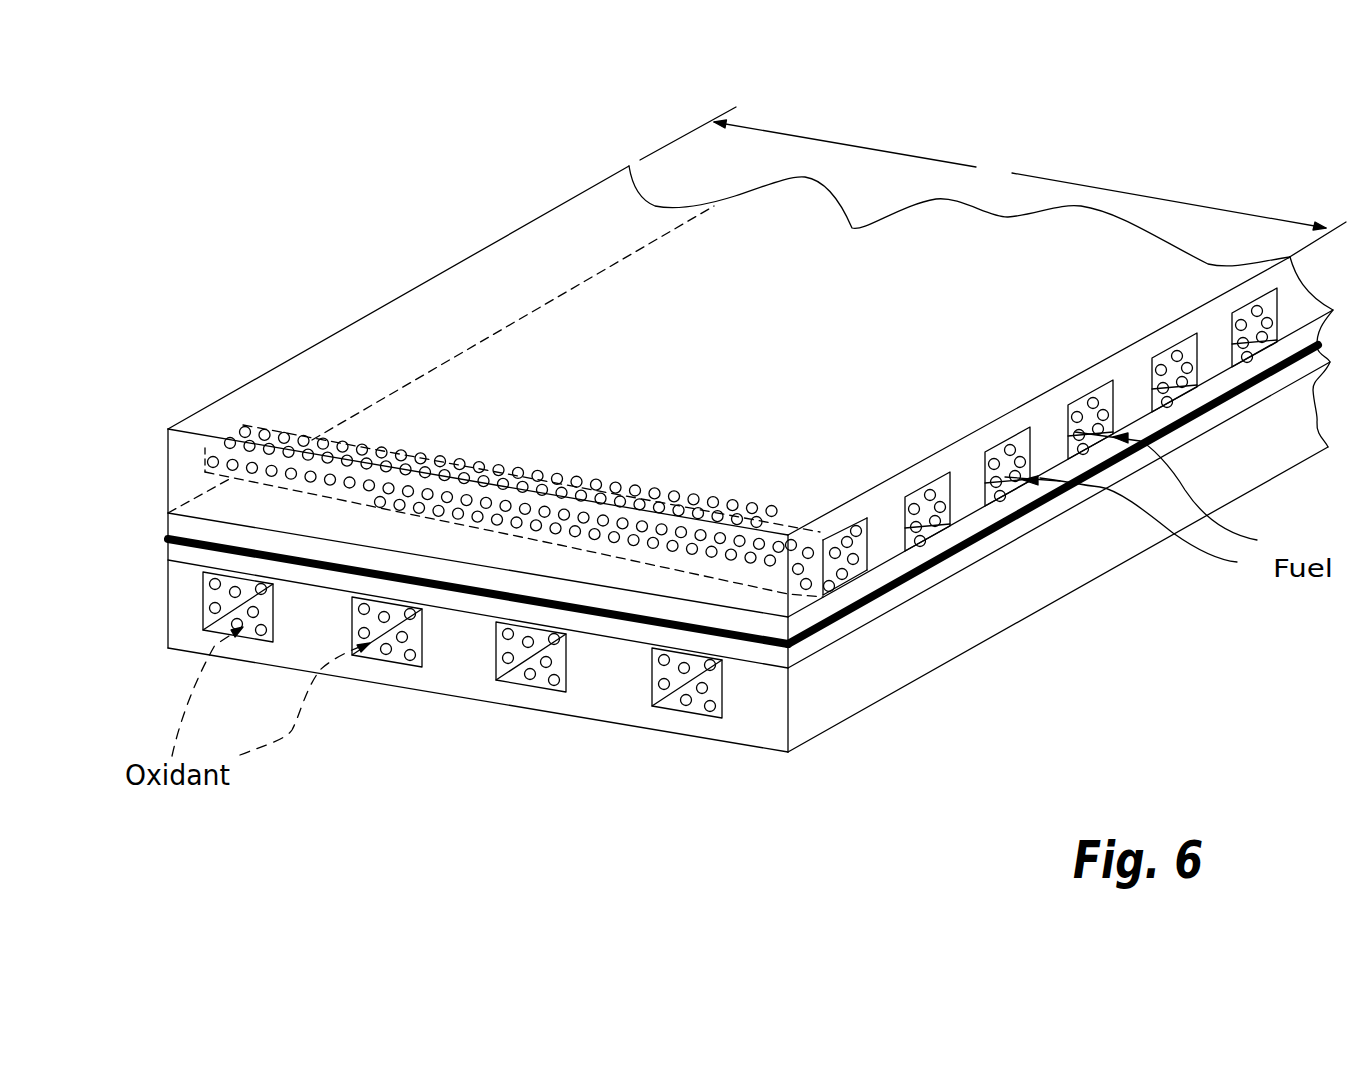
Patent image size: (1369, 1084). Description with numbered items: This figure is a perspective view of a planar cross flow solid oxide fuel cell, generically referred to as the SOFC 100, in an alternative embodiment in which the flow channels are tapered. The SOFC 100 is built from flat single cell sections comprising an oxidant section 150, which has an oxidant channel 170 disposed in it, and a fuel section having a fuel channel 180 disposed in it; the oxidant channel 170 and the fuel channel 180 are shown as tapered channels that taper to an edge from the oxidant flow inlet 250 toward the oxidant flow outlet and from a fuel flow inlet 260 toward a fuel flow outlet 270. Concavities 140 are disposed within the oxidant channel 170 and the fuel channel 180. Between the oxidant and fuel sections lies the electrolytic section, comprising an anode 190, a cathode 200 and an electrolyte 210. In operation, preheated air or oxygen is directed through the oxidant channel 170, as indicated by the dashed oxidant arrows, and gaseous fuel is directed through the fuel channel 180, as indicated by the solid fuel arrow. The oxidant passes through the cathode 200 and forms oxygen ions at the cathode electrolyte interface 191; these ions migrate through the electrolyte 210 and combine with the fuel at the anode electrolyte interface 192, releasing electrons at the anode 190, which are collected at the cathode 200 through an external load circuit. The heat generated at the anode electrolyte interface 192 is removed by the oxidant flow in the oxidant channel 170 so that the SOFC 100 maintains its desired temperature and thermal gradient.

The solid oxide fuel cell 100 is at (325, 223).
The concavities 140 is at (407, 658).
The oxidant section 150 is at (1034, 587).
The oxidant channel 170 is at (200, 612).
The fuel channel 180 is at (1127, 438).
The anode 190 is at (167, 525).
The cathode electrolyte interface 191 is at (790, 647).
The anode electrolyte interface 192 is at (799, 624).
The cathode 200 is at (177, 553).
The electrolyte 210 is at (167, 539).
The oxidant flow inlet 250 is at (734, 702).
The fuel flow inlet 260 is at (871, 542).
The fuel flow outlet 270 is at (232, 431).